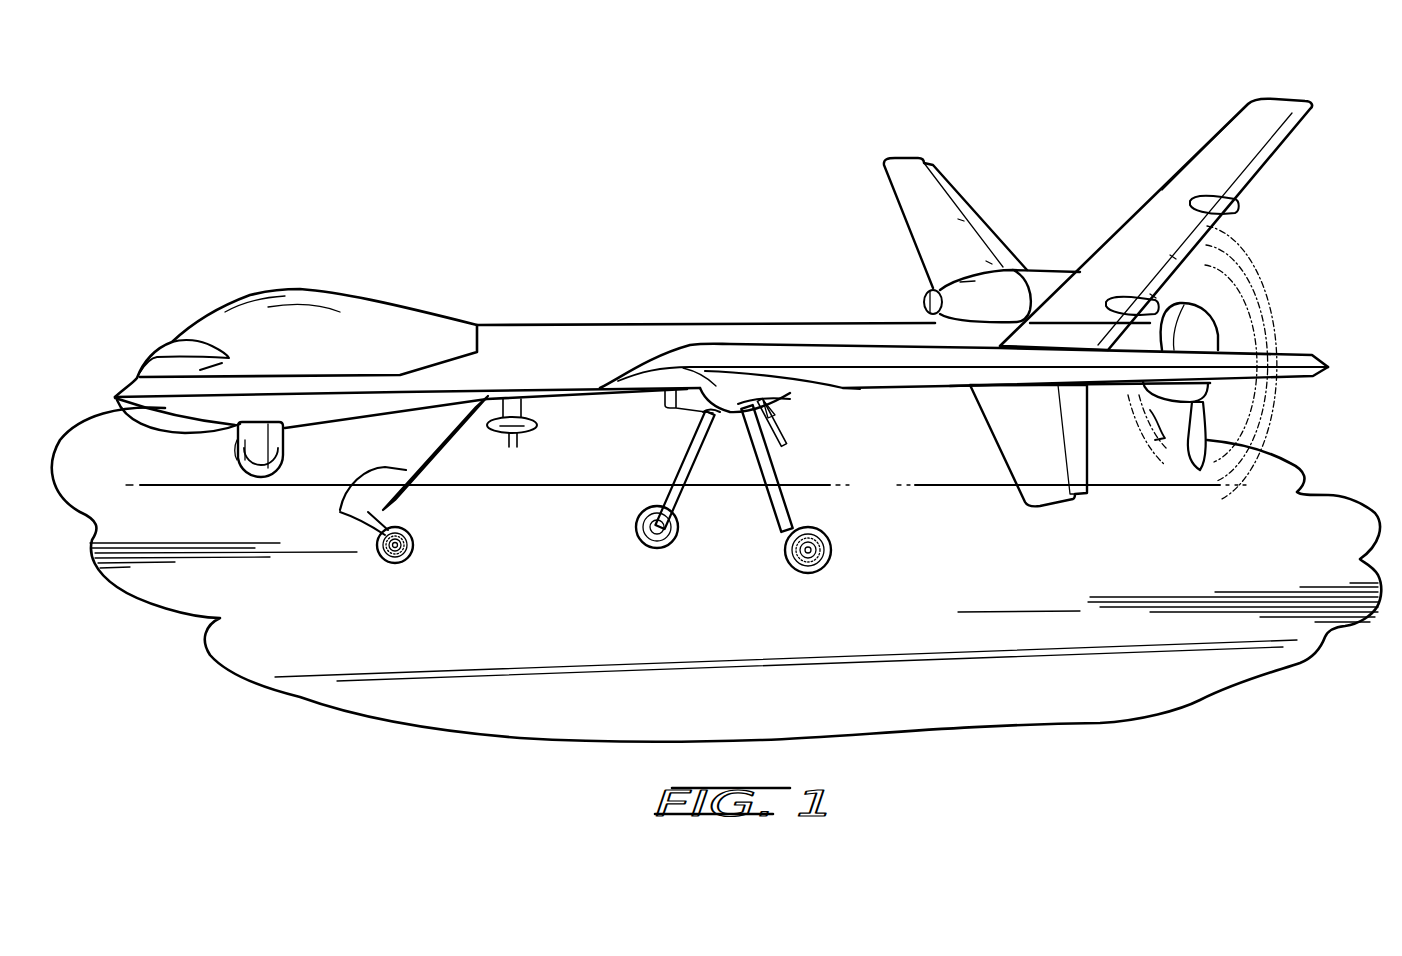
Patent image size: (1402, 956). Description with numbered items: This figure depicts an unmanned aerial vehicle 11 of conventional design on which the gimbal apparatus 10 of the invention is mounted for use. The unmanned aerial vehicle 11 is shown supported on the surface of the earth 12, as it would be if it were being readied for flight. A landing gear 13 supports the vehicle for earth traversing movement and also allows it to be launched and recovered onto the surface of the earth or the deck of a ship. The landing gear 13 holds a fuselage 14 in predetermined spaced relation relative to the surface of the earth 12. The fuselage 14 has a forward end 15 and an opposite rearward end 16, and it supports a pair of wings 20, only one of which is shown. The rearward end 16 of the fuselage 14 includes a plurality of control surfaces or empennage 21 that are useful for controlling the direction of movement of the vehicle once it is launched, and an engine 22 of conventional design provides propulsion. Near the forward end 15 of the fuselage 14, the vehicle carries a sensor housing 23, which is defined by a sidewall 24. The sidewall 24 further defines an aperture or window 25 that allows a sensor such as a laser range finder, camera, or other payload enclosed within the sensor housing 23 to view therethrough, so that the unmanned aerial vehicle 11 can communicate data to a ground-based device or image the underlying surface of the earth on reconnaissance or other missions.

The gimbal apparatus 10 is at (300, 441).
The unmanned aerial vehicle 11 is at (631, 290).
The surface of the earth 12 is at (938, 591).
The landing gear 13 is at (433, 447).
The fuselage 14 is at (540, 338).
The forward end 15 is at (127, 393).
The rearward end 16 is at (1167, 328).
The wings 20 is at (963, 373).
The control surfaces or empennage 21 is at (1157, 220).
The engine 22 is at (1200, 330).
The sensor housing 23 is at (265, 467).
The sidewall 24 is at (240, 432).
The aperture or window 25 is at (243, 458).